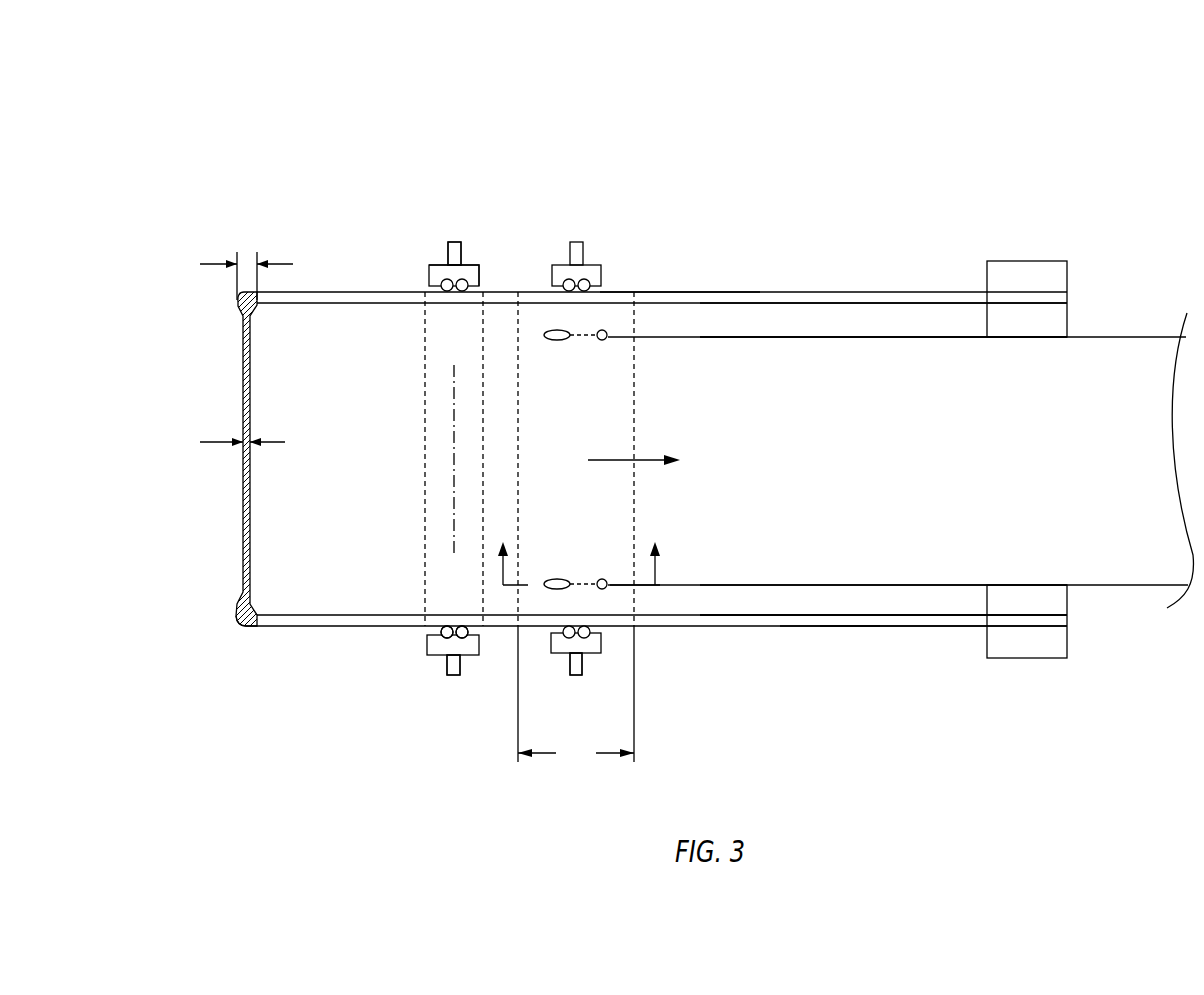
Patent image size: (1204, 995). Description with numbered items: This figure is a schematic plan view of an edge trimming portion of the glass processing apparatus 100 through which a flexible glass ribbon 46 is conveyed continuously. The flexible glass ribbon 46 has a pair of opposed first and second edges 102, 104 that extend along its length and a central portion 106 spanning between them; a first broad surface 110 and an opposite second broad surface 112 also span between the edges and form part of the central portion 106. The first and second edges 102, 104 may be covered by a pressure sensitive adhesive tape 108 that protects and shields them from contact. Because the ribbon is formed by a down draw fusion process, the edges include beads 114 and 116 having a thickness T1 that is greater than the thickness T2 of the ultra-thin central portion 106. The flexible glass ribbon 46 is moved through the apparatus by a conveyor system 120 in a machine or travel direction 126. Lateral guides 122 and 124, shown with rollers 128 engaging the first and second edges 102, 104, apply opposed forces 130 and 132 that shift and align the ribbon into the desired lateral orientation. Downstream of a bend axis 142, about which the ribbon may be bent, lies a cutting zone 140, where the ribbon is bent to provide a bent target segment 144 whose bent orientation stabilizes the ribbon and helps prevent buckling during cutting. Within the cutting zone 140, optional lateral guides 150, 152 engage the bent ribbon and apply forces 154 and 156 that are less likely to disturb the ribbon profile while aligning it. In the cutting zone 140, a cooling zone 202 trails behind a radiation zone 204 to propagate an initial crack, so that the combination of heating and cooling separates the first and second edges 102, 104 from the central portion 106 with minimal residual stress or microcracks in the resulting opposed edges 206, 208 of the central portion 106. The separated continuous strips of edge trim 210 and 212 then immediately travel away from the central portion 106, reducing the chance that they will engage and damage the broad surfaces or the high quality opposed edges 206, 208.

The glass processing apparatus 100 is at (723, 100).
The flexible glass ribbon 46 is at (748, 203).
The first edge 102 is at (680, 628).
The second edge 104 is at (657, 292).
The central portion 106 is at (793, 530).
The pressure sensitive adhesive tape 108 is at (705, 292).
The first broad surface 110 is at (833, 360).
The second broad surface 112 is at (887, 645).
The bead 114 is at (236, 615).
The bead 116 is at (237, 307).
The conveyor system 120 is at (418, 248).
The lateral guide 122 is at (428, 640).
The lateral guide 124 is at (468, 265).
The travel direction 126 is at (605, 460).
The roller 128 is at (445, 624).
The force 130 is at (452, 690).
The force 132 is at (454, 232).
The cutting zone 140 is at (576, 698).
The bend axis 142 is at (453, 413).
The bent target segment 144 is at (620, 567).
The lateral guide 150 is at (562, 655).
The lateral guide 152 is at (590, 265).
The force 154 is at (578, 690).
The force 156 is at (575, 232).
The cooling zone 202 is at (600, 578).
The radiation zone 204 is at (560, 578).
The opposed edge of central portion 206 is at (917, 585).
The opposed edge of central portion 208 is at (918, 335).
The edge trim 210 is at (758, 600).
The edge trim 212 is at (780, 320).
The bead thickness T1 is at (246, 266).
The central portion thickness T2 is at (250, 440).